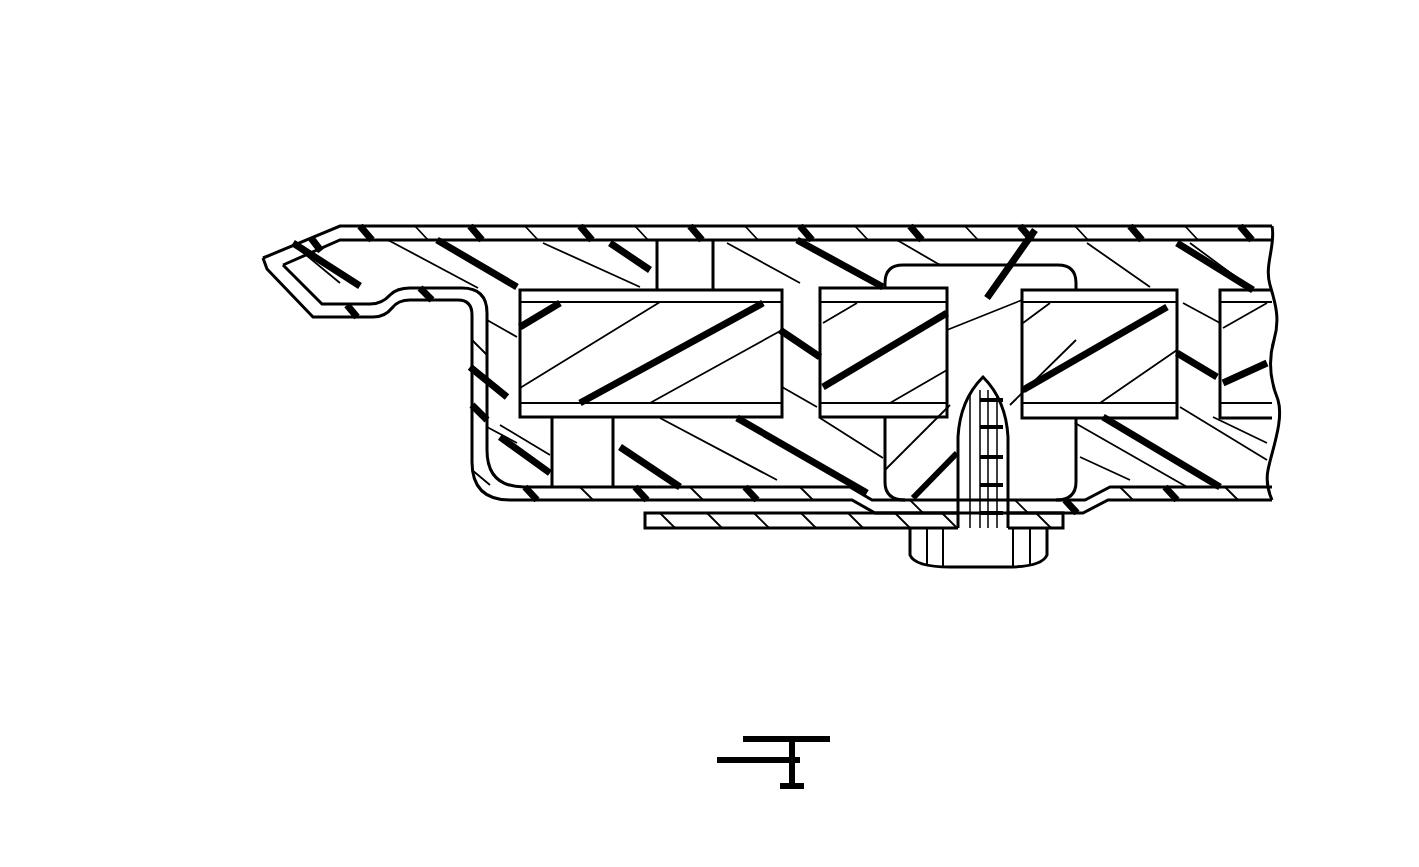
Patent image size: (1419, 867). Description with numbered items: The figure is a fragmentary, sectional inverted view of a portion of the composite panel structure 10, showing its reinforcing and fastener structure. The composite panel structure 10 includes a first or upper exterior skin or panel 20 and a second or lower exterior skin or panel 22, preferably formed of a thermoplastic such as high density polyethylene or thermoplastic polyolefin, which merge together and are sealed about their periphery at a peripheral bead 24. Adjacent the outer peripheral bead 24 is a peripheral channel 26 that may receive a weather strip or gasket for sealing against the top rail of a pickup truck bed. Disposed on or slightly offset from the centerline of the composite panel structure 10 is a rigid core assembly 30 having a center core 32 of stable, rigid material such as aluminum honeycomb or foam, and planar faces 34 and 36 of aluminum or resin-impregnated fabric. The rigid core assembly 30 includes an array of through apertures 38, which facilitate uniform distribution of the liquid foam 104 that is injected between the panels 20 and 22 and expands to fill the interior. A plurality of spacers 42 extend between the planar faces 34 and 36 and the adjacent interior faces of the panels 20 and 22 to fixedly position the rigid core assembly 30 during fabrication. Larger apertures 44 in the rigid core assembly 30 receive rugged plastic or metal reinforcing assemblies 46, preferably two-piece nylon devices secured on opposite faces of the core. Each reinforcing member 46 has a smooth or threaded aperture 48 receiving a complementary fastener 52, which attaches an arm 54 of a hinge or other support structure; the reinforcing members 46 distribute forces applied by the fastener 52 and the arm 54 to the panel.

The composite panel structure 10 is at (800, 100).
The first or upper exterior skin or panel 20 is at (1240, 503).
The second or lower exterior skin or panel 22 is at (453, 224).
The peripheral bead 24 is at (265, 262).
The peripheral channel 26 is at (442, 300).
The rigid core assembly 30 is at (1300, 352).
The center core 32 is at (530, 360).
The planar face 34 is at (1268, 297).
The planar face 36 is at (1277, 412).
The through aperture 38 is at (800, 297).
The spacer 42 is at (683, 247).
The larger aperture 44 is at (962, 290).
The reinforcing assembly 46 is at (1033, 287).
The smooth or threaded aperture 48 is at (980, 480).
The fastener 52 is at (987, 553).
The arm 54 is at (733, 533).
The liquid foam 104 is at (547, 260).